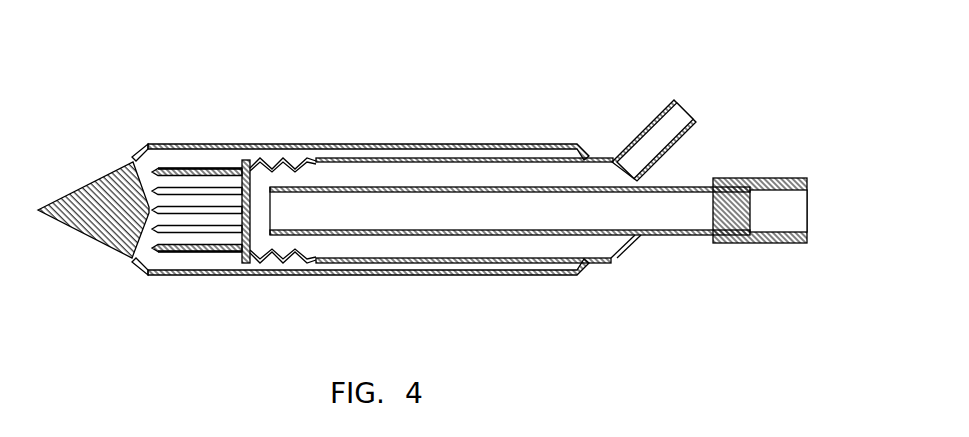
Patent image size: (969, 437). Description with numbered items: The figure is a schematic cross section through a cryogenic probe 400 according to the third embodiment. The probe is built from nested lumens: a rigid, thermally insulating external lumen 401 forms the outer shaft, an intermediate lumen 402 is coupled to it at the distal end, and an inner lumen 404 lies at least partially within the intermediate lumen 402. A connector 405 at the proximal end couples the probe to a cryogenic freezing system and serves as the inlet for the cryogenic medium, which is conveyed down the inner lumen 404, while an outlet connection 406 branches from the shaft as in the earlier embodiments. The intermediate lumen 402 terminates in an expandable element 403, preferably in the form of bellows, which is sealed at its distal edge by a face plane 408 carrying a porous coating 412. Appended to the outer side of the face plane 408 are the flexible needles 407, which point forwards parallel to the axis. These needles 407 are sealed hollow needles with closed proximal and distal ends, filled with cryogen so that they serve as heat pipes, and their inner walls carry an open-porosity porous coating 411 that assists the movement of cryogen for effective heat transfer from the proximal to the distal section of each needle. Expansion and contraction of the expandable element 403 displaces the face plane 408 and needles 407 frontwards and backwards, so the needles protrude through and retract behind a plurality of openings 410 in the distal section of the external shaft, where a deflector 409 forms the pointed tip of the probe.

The cryogenic probe 400 is at (447, 123).
The external lumen 401 is at (377, 145).
The intermediate lumen 402 is at (340, 260).
The expandable element 403 is at (277, 262).
The inner lumen 404 is at (522, 232).
The connector 405 is at (780, 178).
The outlet connection 406 is at (648, 127).
The flexible needles 407 is at (195, 252).
The face plane 408 is at (243, 161).
The deflector 409 is at (84, 186).
The openings 410 is at (135, 262).
The porous coating 411 is at (178, 168).
The porous coating 412 is at (283, 158).